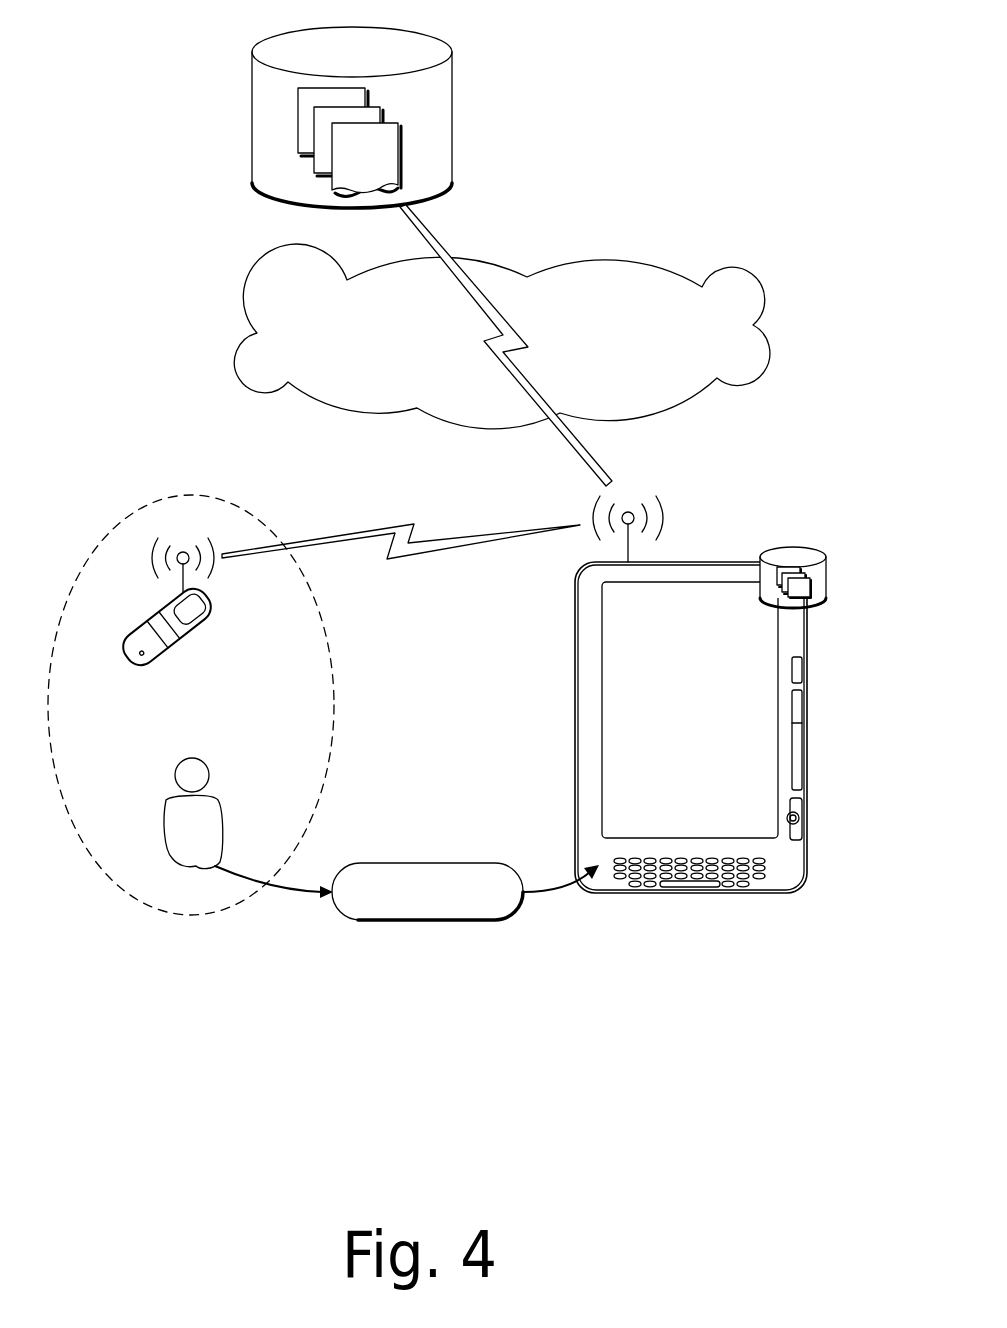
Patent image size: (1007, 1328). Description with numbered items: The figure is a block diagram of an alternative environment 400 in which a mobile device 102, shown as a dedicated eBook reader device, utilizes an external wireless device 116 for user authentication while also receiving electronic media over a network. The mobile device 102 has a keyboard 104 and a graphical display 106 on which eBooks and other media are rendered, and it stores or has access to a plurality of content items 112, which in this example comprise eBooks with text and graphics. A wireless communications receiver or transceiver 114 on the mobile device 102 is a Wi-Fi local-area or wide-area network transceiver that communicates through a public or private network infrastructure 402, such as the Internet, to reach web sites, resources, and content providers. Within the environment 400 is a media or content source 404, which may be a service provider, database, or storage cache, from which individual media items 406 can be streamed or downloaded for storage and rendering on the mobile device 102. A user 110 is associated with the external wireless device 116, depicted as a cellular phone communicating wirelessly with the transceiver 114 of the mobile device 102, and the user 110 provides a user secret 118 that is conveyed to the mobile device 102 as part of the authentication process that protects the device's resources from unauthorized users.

The environment 400 is at (660, 56).
The network infrastructure 402 is at (633, 261).
The content source 404 is at (452, 52).
The media items 406 is at (400, 157).
The mobile device 102 is at (564, 725).
The keyboard 104 is at (758, 885).
The graphical display 106 is at (617, 655).
The user 110 is at (208, 795).
The content items 112 is at (792, 545).
The wireless communications transceiver 114 is at (627, 496).
The external wireless device 116 is at (187, 652).
The user secret 118 is at (425, 922).